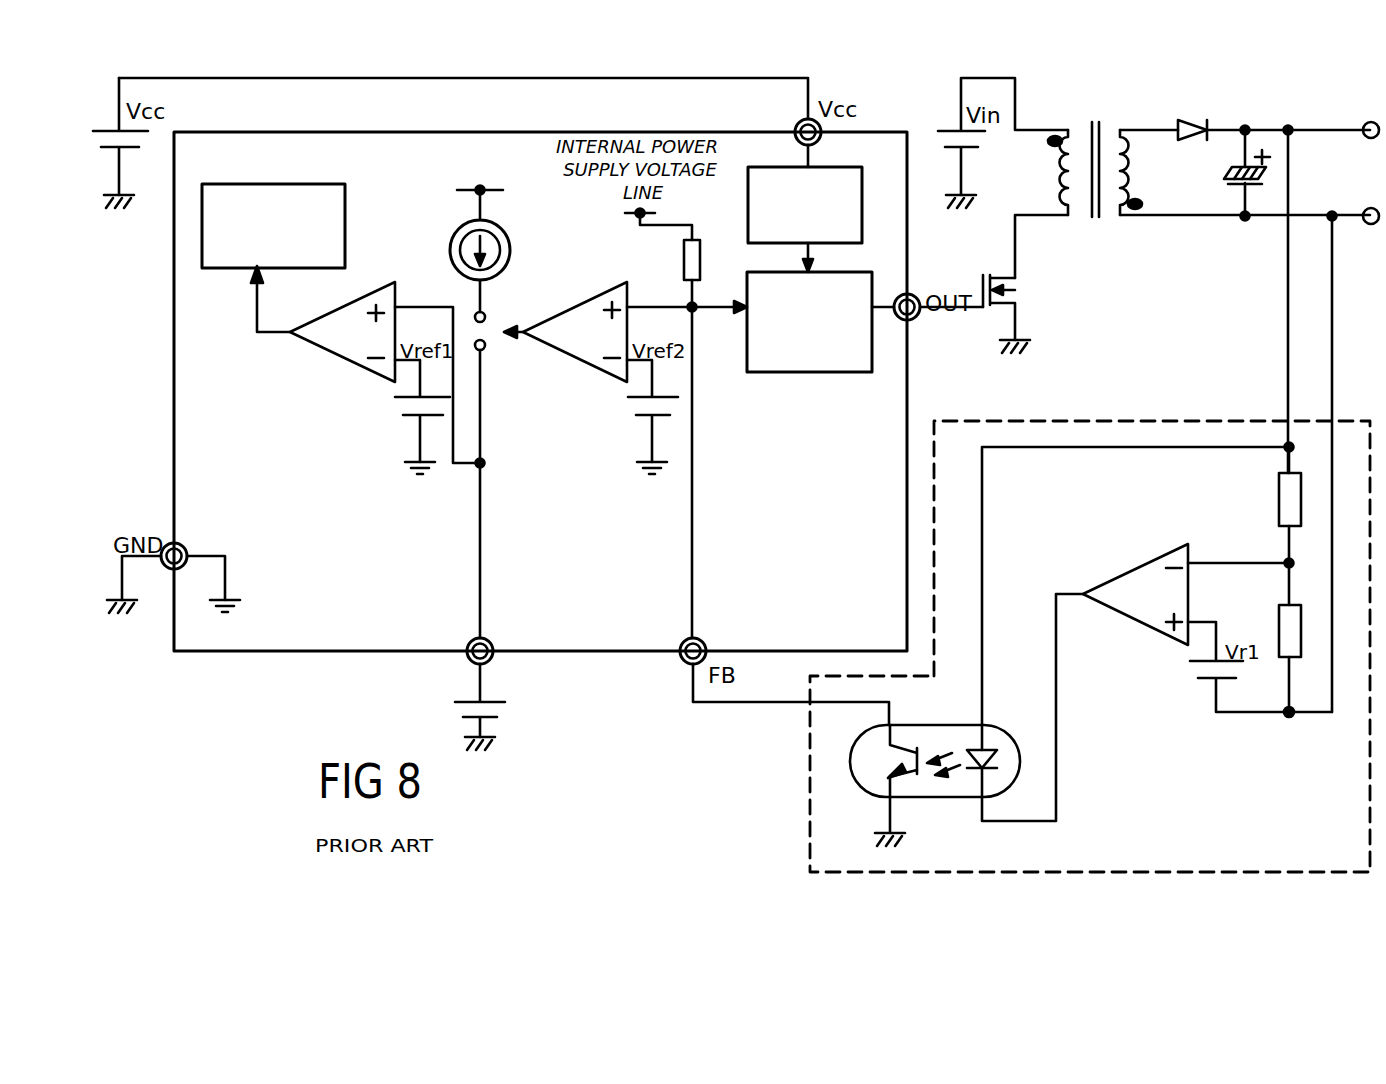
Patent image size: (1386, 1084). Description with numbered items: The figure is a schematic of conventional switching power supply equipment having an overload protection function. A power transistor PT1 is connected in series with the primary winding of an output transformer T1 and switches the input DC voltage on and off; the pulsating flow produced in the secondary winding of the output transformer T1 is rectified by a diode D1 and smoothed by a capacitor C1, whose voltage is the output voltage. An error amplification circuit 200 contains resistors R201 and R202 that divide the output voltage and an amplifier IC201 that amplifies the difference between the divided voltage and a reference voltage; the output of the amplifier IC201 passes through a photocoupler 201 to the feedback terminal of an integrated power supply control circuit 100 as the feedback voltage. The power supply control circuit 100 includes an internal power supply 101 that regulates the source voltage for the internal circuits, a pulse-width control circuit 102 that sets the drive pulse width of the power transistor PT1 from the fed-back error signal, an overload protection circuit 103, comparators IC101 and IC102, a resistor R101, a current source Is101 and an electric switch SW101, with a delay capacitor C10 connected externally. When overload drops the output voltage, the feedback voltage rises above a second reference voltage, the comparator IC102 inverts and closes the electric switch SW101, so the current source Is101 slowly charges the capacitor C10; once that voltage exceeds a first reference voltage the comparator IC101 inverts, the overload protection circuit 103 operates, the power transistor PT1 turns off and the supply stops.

The power supply control circuit 100 is at (498, 131).
The internal power supply 101 is at (836, 163).
The pulse-width control circuit 102 is at (845, 270).
The overload protection circuit 103 is at (260, 183).
The error amplification circuit 200 is at (1086, 421).
The photocoupler 201 is at (905, 727).
The comparator IC101 is at (332, 358).
The comparator IC102 is at (562, 312).
The current source Is101 is at (533, 242).
The electric switch SW101 is at (486, 349).
The resistor R101 is at (684, 252).
The capacitor C10 is at (490, 712).
The output transformer T1 is at (1096, 122).
The diode D1 is at (1190, 122).
The capacitor C1 is at (1228, 173).
The power transistor PT1 is at (1020, 291).
The amplifier IC IC201 is at (1136, 566).
The resistor R201 is at (1278, 502).
The resistor R202 is at (1278, 630).